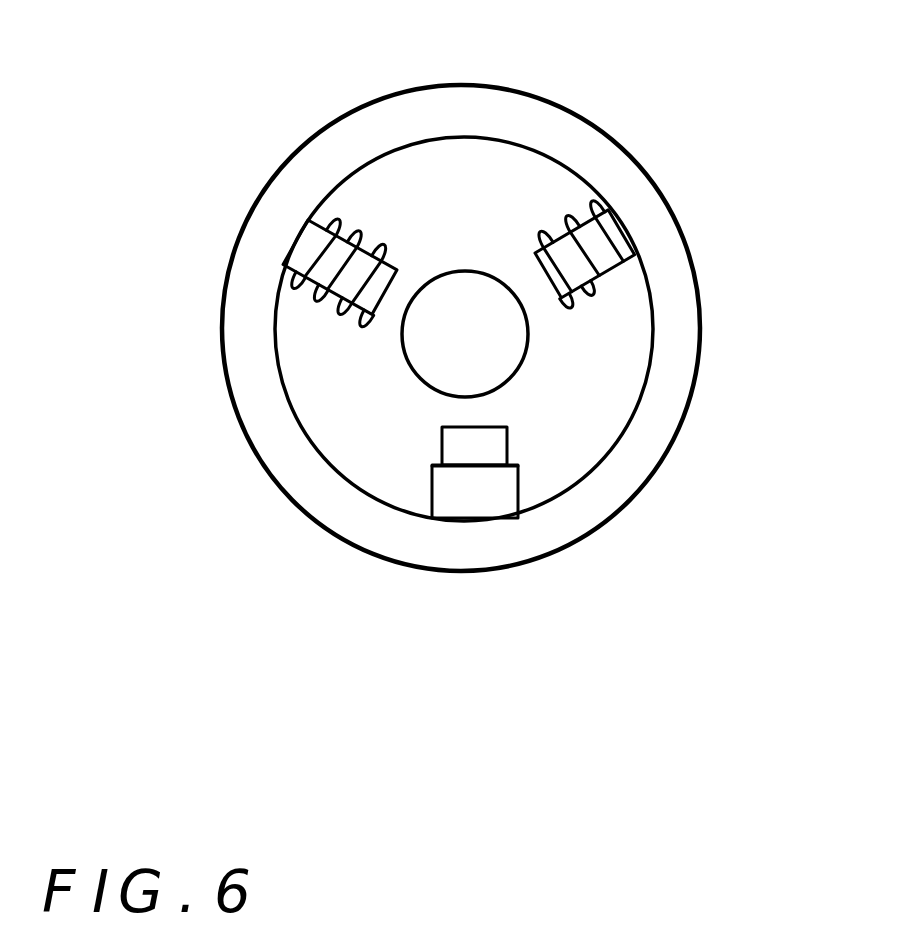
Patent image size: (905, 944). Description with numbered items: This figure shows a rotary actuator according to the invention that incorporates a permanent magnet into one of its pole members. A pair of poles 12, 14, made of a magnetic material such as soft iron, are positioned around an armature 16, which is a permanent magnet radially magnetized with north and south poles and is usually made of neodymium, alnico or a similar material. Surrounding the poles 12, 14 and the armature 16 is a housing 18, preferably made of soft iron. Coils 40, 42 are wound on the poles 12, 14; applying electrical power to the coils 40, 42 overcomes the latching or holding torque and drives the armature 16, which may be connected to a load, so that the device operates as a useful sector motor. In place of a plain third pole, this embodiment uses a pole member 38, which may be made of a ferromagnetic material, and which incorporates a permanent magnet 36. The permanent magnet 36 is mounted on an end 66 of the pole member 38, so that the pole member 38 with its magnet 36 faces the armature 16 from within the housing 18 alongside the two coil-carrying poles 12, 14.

The pole 12 is at (310, 242).
The pole 14 is at (614, 231).
The armature 16 is at (512, 338).
The housing 18 is at (550, 157).
The permanent magnet 36 is at (490, 443).
The pole member 38 is at (490, 490).
The coil 40 is at (310, 302).
The coil 42 is at (618, 266).
The end of the pole member 66 is at (470, 467).